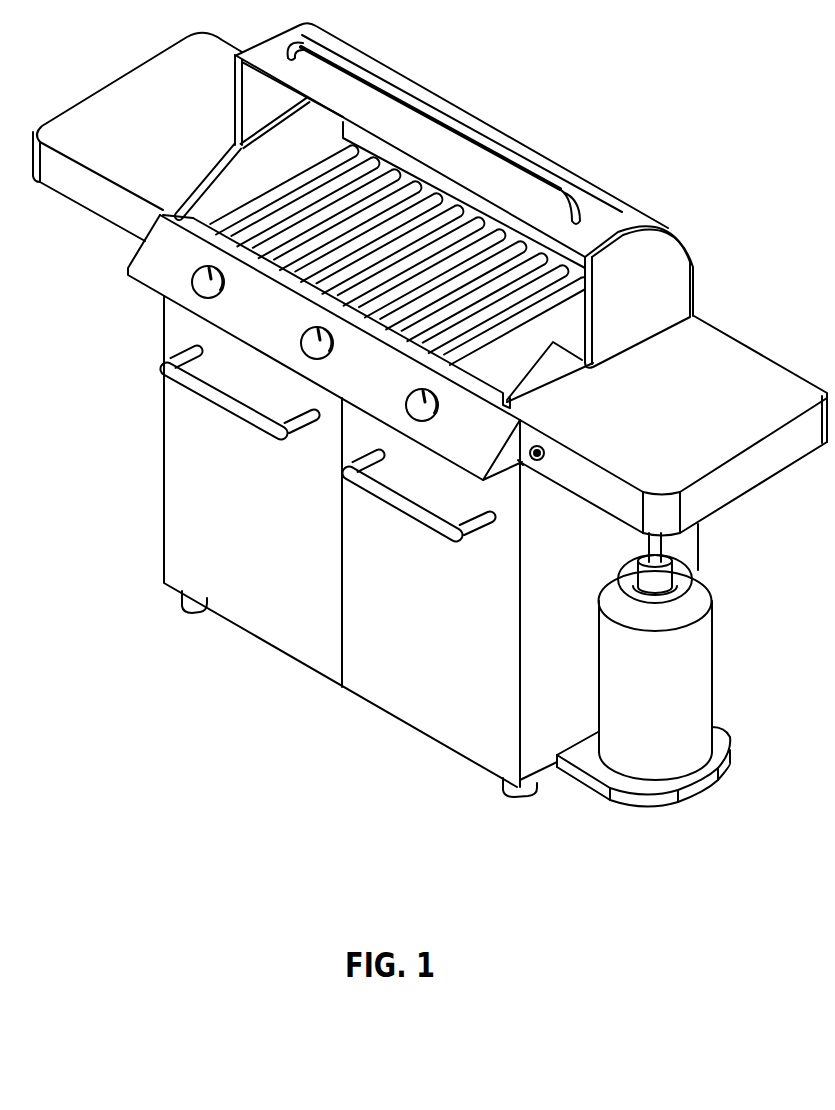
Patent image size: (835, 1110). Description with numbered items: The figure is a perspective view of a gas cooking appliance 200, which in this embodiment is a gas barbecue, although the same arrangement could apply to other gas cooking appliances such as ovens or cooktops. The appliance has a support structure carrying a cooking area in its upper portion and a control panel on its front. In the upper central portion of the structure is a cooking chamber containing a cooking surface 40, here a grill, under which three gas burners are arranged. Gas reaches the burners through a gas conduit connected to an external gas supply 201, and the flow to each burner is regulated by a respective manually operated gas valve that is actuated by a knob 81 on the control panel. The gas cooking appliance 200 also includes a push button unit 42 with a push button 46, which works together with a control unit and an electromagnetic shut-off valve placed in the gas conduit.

The gas cooking appliance 200 is at (428, 414).
The cooking surface 40 is at (247, 180).
The knob 81 is at (404, 404).
The push button 46 is at (523, 462).
The push button unit 42 is at (545, 485).
The external gas supply 201 is at (712, 638).